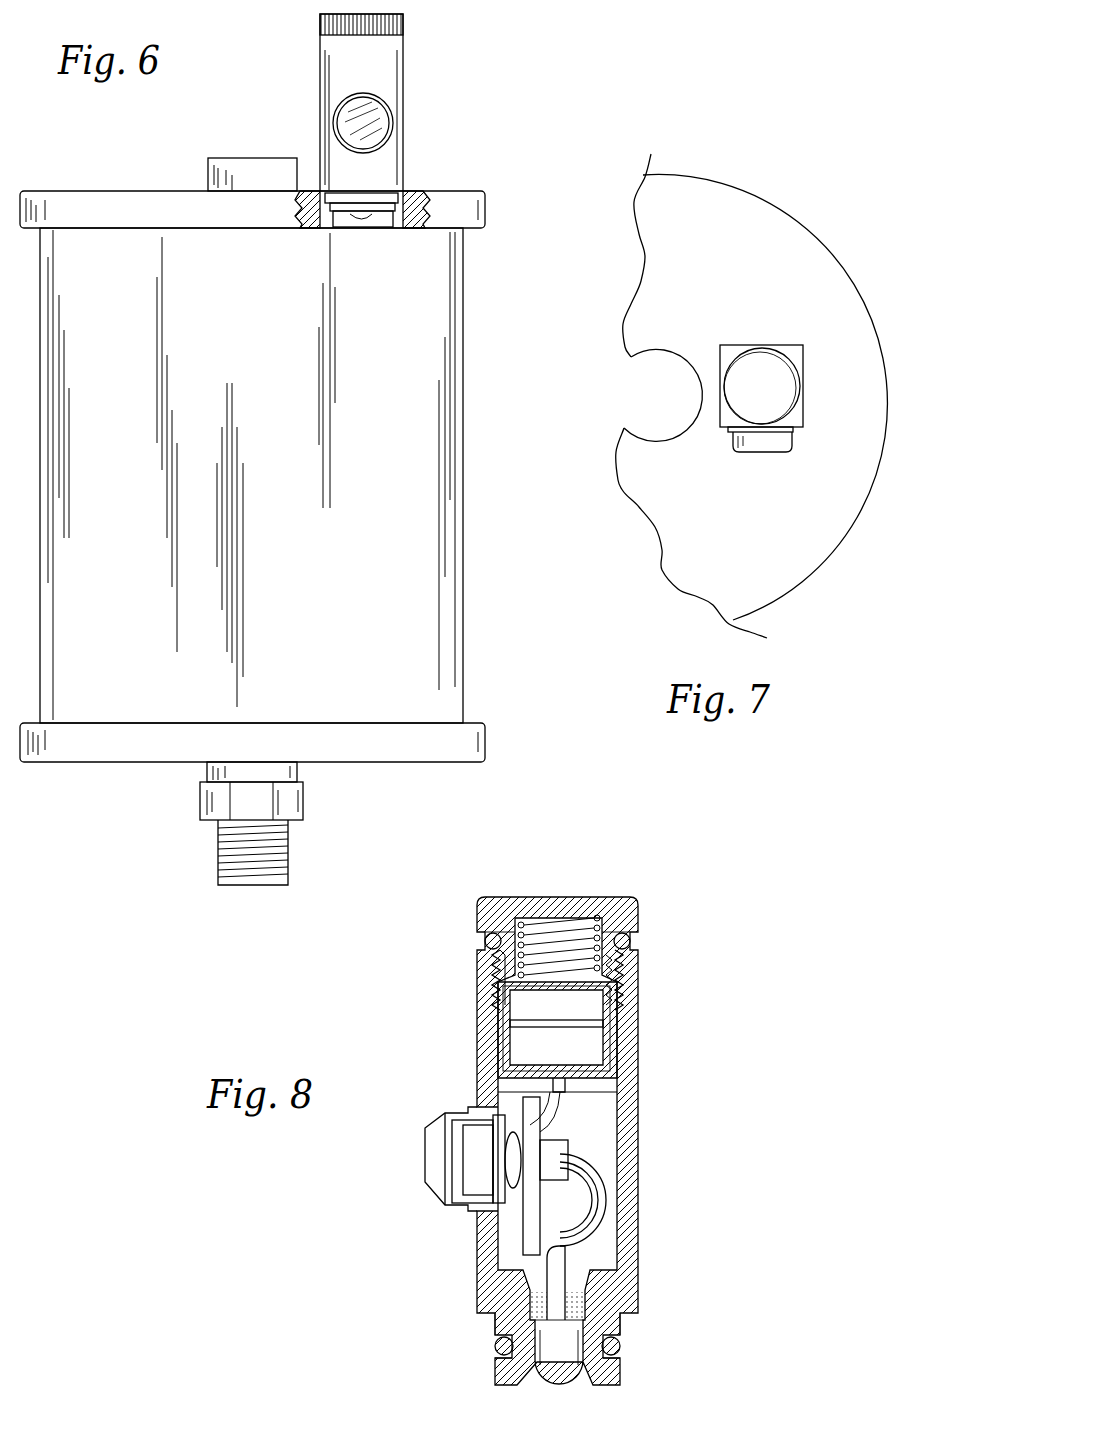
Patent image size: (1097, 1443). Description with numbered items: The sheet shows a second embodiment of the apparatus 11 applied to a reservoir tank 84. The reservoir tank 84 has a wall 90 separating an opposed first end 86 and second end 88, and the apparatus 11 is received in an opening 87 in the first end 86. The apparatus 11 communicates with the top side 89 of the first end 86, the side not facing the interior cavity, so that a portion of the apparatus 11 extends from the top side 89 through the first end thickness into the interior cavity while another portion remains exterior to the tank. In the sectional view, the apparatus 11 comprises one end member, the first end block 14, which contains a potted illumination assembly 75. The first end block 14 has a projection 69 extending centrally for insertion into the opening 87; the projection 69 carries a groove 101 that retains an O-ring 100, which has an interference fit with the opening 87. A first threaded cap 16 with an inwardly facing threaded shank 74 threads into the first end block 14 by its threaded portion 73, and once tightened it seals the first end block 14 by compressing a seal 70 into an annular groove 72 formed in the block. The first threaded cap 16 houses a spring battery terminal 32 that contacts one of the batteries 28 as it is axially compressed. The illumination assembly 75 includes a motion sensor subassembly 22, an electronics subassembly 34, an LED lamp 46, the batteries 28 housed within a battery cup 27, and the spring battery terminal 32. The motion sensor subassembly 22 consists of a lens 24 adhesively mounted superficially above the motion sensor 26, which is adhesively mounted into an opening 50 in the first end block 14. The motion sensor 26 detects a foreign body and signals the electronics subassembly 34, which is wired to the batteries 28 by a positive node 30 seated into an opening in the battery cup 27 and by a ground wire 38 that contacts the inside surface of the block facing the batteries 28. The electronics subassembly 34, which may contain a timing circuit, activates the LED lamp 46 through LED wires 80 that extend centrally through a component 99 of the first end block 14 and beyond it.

In FIG. 6, the apparatus 11 is at (416, 100).
In FIG. 7, the apparatus 11 is at (728, 369).
In FIG. 6, the first end block 14 is at (385, 70).
In FIG. 7, the first end block 14 is at (722, 352).
In FIG. 8, the first end block 14 is at (640, 1185).
In FIG. 8, the first threaded cap 16 is at (565, 897).
In FIG. 6, the motion sensor subassembly 22 is at (396, 140).
In FIG. 7, the motion sensor subassembly 22 is at (755, 437).
In FIG. 8, the motion sensor subassembly 22 is at (417, 1151).
In FIG. 8, the lens 24 is at (425, 1165).
In FIG. 8, the motion sensor 26 is at (470, 1150).
In FIG. 8, the battery cup 27 is at (610, 1030).
In FIG. 8, the batteries 28 is at (530, 1045).
In FIG. 8, the positive node 30 is at (553, 1090).
In FIG. 8, the spring battery terminal 32 is at (540, 920).
In FIG. 8, the electronics subassembly 34 is at (568, 1148).
In FIG. 8, the ground wire 38 is at (610, 1060).
In FIG. 6, the LED lamp 46 is at (375, 228).
In FIG. 8, the LED lamp 46 is at (540, 1360).
In FIG. 8, the opening 50 is at (480, 1120).
In FIG. 8, the projection 69 is at (622, 1370).
In FIG. 8, the seal 70 is at (640, 945).
In FIG. 8, the annular groove 72 is at (628, 935).
In FIG. 8, the threaded portion 73 is at (632, 970).
In FIG. 8, the threaded shank 74 is at (505, 950).
In FIG. 8, the illumination assembly 75 is at (455, 1230).
In FIG. 8, the LED wires 80 is at (555, 1265).
In FIG. 6, the reservoir tank 84 is at (476, 402).
In FIG. 6, the first end 86 is at (180, 205).
In FIG. 6, the opening 87 is at (343, 190).
In FIG. 6, the second end 88 is at (153, 745).
In FIG. 6, the top side 89 is at (108, 191).
In FIG. 7, the top side 89 is at (720, 203).
In FIG. 6, the wall 90 is at (257, 356).
In FIG. 8, the component 99 is at (578, 1292).
In FIG. 8, the O-ring 100 is at (495, 1346).
In FIG. 8, the groove 101 is at (497, 1325).